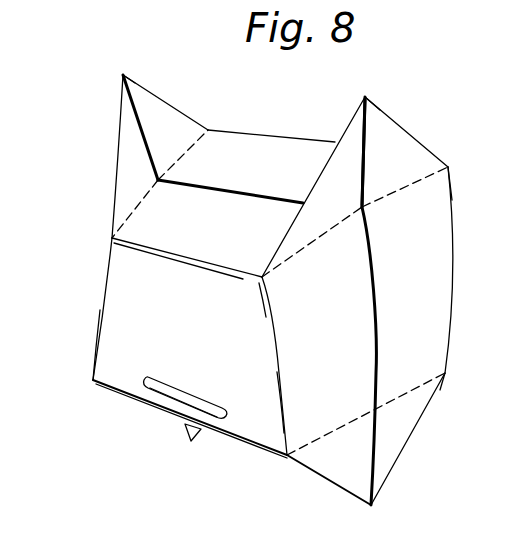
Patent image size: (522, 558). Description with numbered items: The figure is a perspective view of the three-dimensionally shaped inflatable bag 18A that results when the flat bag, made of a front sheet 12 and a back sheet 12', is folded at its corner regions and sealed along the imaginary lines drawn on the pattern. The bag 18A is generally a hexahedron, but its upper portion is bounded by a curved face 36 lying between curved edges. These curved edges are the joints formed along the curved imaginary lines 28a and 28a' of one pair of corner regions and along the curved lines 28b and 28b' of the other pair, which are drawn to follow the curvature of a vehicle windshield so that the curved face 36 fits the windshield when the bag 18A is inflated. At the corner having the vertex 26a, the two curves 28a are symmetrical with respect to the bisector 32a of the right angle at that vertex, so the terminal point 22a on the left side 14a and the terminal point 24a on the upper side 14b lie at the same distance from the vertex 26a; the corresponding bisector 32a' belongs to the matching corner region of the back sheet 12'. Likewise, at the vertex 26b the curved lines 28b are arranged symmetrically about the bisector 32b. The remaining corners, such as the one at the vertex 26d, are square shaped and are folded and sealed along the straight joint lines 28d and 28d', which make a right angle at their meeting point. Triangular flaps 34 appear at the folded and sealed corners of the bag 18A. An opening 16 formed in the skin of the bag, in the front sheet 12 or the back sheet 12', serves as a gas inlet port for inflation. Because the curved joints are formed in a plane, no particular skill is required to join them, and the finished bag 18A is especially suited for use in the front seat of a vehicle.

The vertex 26b is at (121, 75).
The bisector 32b is at (172, 104).
The curved face 36 is at (256, 137).
The bisector 32a' is at (313, 178).
The vertex 26a is at (369, 97).
The flap edge / tab 34 is at (406, 132).
The bisector 32a is at (463, 170).
The imaginary line 28b is at (203, 155).
The imaginary line 28b' is at (152, 209).
The terminal point 24a is at (388, 152).
The terminal point 22a is at (366, 203).
The imaginary line 28a is at (405, 197).
The front sheet 12 is at (467, 270).
The upper side 14b is at (245, 194).
The three-dimensionally shaped bag 18A is at (97, 279).
The imaginary line 28a' is at (312, 242).
The left side 14a is at (377, 300).
The back sheet 12' is at (77, 342).
The joint line 28d is at (421, 366).
The opening 16 is at (176, 391).
The joint line 28d' is at (366, 414).
The vertex 26d is at (375, 506).